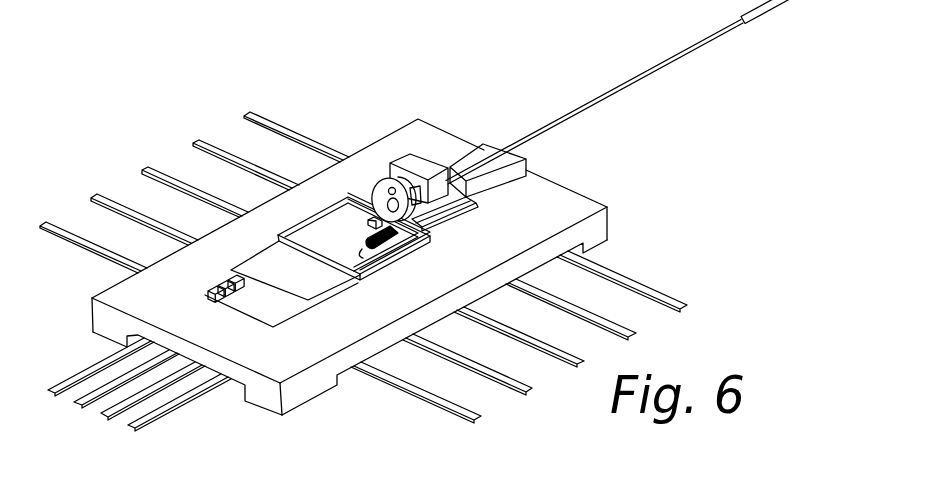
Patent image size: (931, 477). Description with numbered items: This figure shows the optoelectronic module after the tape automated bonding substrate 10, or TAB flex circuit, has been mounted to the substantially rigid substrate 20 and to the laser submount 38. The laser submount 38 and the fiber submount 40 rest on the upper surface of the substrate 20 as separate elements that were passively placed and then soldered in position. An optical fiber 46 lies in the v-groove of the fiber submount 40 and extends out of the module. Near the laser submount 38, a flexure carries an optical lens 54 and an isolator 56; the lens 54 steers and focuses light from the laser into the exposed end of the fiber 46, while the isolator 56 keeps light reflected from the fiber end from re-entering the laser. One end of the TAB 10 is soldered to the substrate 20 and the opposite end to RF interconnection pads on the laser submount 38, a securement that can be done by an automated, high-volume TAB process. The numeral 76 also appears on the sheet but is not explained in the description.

The tape automated bonding substrate 10 is at (267, 339).
The substrate 20 is at (437, 113).
The laser submount 38 is at (362, 281).
The fiber submount 40 is at (490, 152).
The optical fiber 46 is at (602, 96).
The optical lens 54 is at (378, 186).
The isolator 56 is at (407, 162).
The sheet reference 76 is at (625, 468).